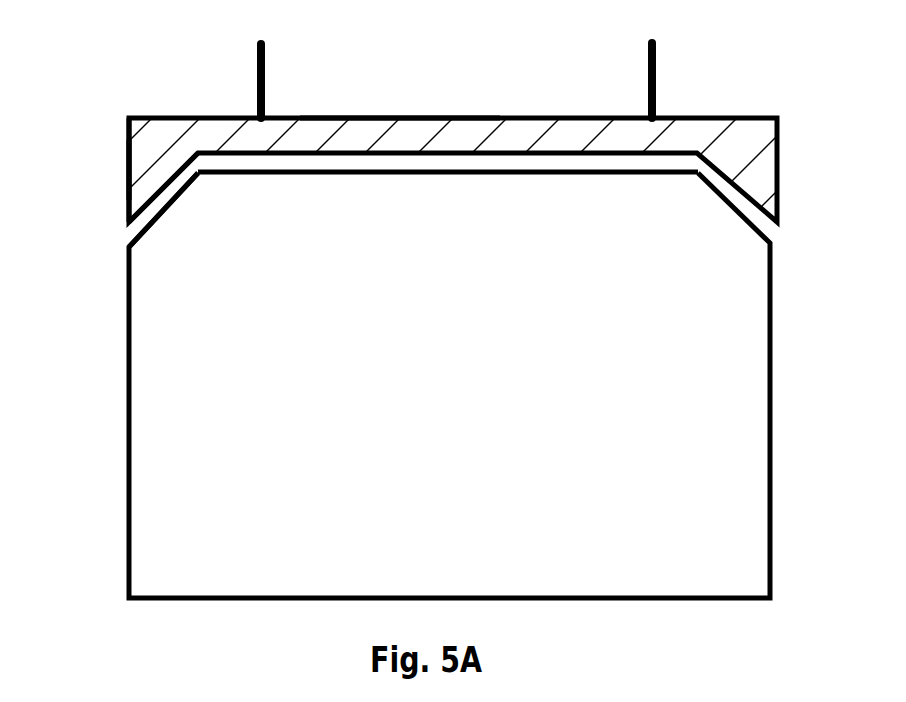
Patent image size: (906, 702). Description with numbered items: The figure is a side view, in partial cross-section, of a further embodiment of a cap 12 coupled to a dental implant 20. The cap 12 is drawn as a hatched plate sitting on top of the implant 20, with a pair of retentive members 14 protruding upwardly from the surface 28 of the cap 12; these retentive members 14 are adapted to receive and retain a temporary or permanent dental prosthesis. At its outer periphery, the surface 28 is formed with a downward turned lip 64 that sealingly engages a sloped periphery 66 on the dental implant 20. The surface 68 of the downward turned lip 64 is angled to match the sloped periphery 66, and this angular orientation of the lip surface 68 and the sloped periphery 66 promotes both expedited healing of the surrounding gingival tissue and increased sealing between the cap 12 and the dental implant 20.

The cap 12 is at (208, 112).
The retentive members 14 is at (257, 73).
The dental implant 20 is at (122, 313).
The surface 28 is at (130, 175).
The downward turned lip 64 is at (145, 147).
The sloped periphery 66 is at (172, 202).
The surface 68 is at (163, 185).